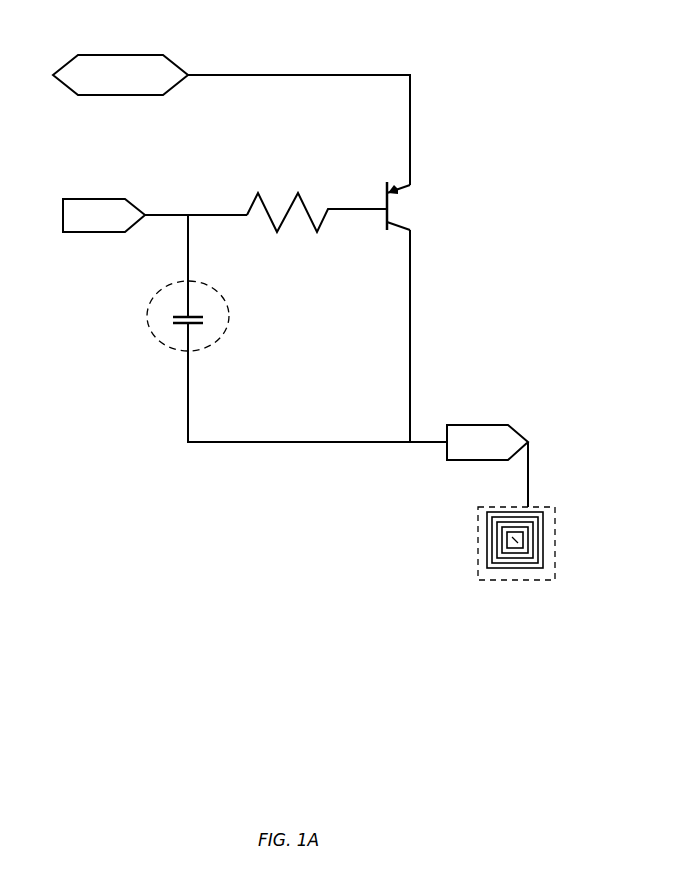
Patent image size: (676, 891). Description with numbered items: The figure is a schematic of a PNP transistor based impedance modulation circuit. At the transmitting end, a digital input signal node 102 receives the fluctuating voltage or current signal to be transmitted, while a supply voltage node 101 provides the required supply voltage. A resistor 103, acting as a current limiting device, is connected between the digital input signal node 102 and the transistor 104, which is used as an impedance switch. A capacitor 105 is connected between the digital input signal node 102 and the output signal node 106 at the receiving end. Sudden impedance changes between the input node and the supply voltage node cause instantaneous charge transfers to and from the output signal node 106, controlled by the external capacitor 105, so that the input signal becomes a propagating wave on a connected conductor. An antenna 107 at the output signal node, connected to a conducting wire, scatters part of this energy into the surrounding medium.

The supply voltage node (tx_vcc) 101 is at (108, 55).
The digital input signal node (tx_in) 102 is at (90, 199).
The resistor (Rb) 103 is at (256, 194).
The transistor (Qp) 104 is at (386, 191).
The capacitor (Cc) 105 is at (180, 327).
The output signal node (tx_out) 106 is at (480, 425).
The antenna 107 is at (557, 543).